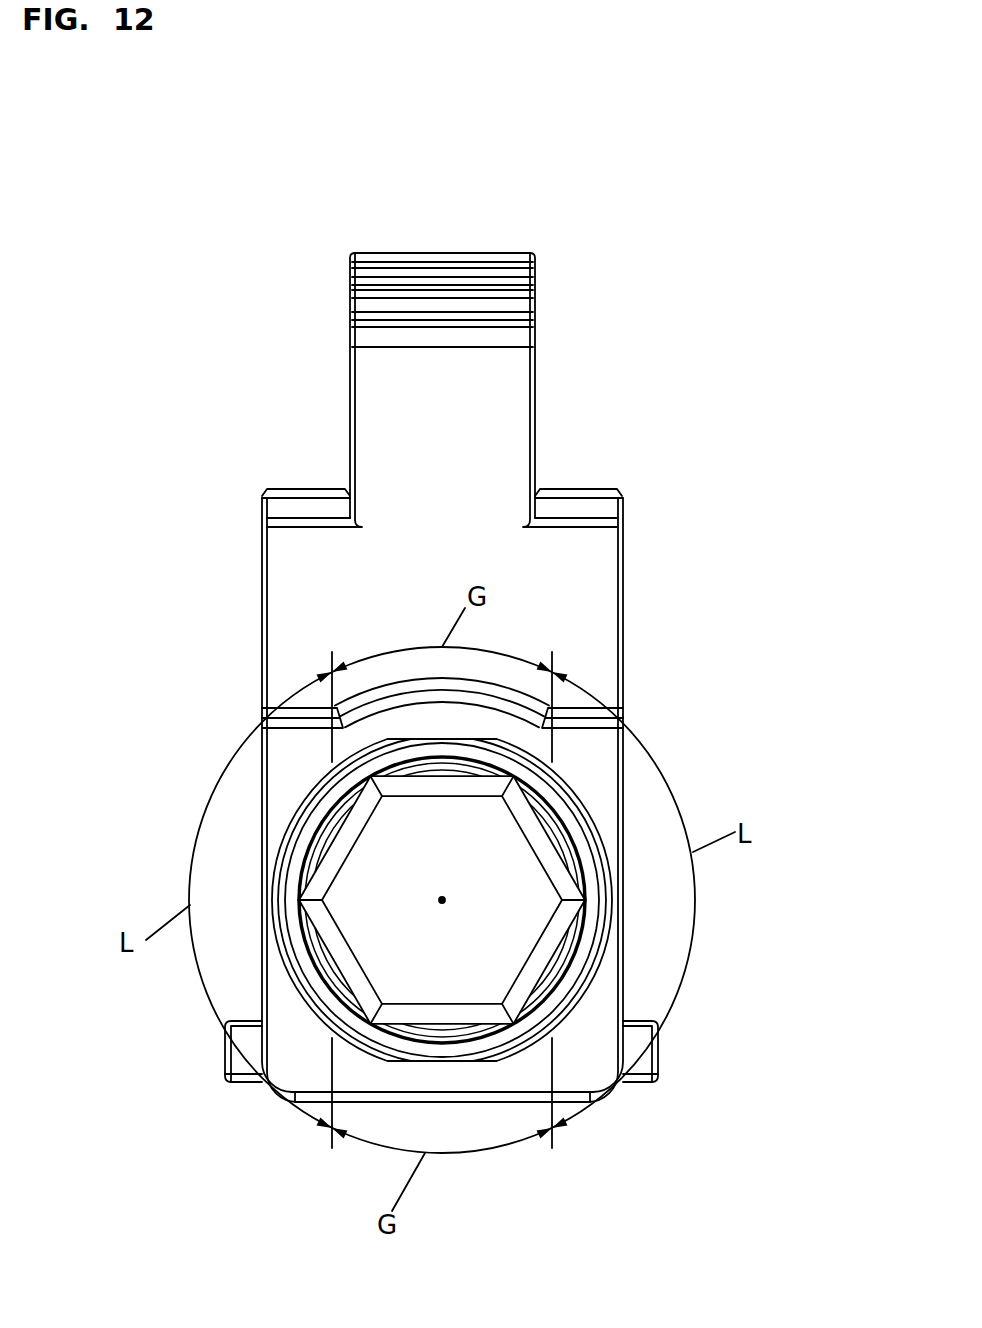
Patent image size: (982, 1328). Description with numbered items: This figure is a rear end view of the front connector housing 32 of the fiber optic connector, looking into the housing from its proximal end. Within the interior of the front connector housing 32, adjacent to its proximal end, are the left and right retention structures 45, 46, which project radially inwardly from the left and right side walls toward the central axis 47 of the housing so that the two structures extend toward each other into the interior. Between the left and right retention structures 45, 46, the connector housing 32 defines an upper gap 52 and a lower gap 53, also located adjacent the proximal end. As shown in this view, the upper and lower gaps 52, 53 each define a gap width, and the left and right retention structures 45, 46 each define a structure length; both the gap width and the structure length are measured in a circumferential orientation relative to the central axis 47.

The front connector housing 32 is at (616, 428).
The left retention structure 45 is at (294, 896).
The right retention structure 46 is at (591, 904).
The central axis 47 is at (440, 901).
The upper gap 52 is at (445, 752).
The lower gap 53 is at (445, 1051).